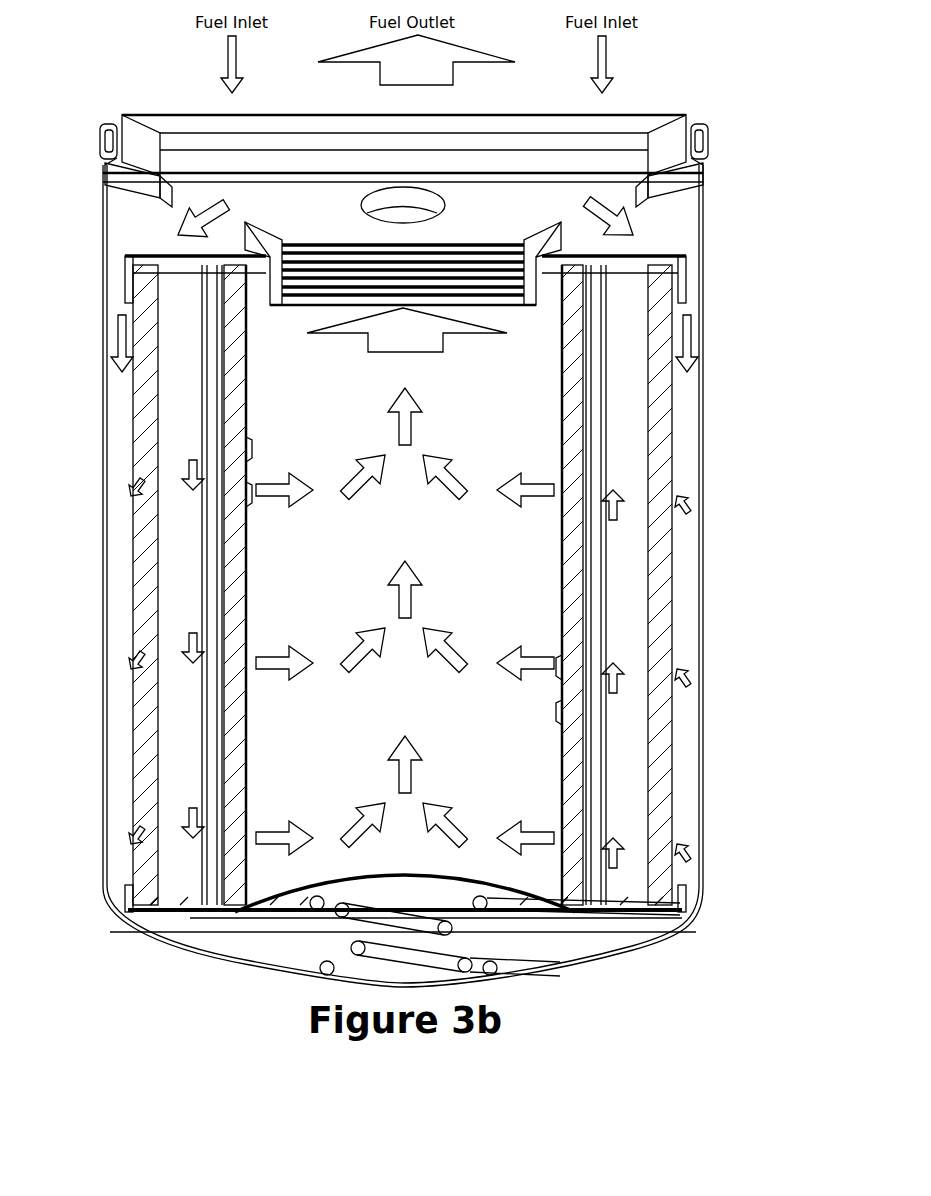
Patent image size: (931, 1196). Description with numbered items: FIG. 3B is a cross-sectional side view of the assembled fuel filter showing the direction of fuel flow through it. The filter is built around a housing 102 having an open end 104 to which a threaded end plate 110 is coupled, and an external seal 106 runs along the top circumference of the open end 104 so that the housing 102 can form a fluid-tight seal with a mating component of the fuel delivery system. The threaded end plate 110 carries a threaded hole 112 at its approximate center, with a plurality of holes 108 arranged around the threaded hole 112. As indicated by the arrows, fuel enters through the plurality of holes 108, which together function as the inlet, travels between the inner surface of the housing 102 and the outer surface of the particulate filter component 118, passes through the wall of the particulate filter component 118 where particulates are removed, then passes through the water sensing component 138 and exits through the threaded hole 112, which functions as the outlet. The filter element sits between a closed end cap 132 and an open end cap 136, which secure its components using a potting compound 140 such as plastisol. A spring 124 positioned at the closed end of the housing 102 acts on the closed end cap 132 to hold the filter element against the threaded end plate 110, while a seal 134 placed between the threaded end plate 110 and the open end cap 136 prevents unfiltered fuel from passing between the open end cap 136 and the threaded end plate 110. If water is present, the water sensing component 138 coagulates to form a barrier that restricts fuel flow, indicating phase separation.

The housing 102 is at (707, 655).
The open end 104 is at (686, 88).
The external seal 106 is at (668, 141).
The plurality of holes 108 is at (575, 213).
The threaded end plate 110 is at (670, 181).
The threaded hole 112 is at (312, 314).
The particulate filter component 118 is at (679, 542).
The spring 124 is at (345, 948).
The closed end cap 132 is at (683, 885).
The seal 134 is at (563, 250).
The open end cap 136 is at (688, 279).
The water sensing component 138 is at (592, 385).
The potting compound 140 is at (178, 266).